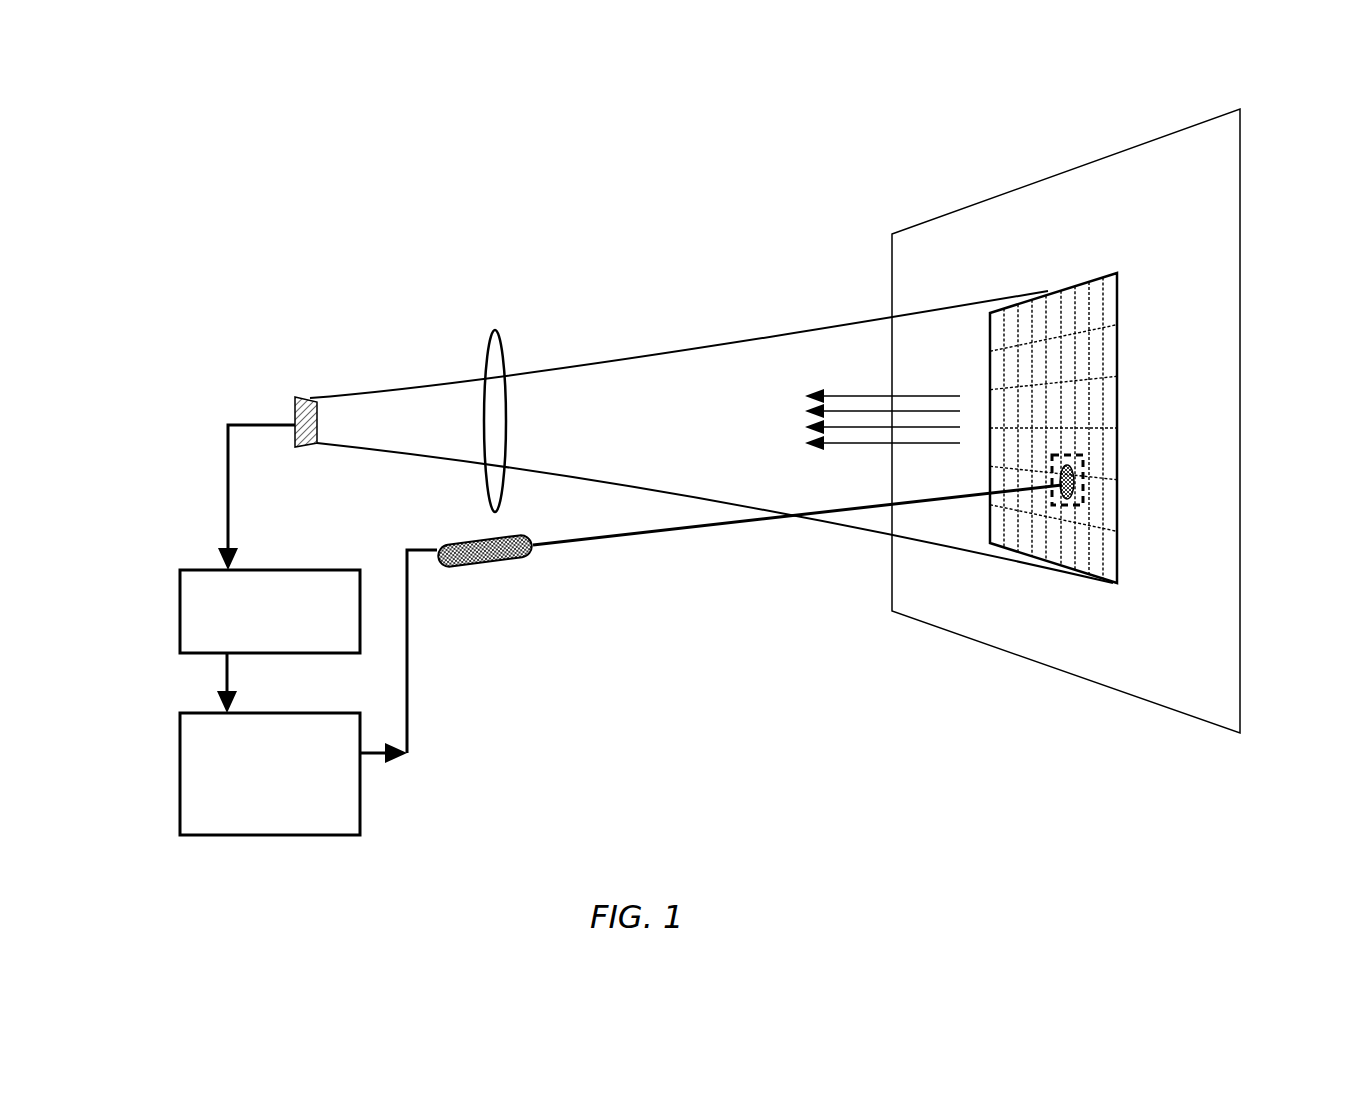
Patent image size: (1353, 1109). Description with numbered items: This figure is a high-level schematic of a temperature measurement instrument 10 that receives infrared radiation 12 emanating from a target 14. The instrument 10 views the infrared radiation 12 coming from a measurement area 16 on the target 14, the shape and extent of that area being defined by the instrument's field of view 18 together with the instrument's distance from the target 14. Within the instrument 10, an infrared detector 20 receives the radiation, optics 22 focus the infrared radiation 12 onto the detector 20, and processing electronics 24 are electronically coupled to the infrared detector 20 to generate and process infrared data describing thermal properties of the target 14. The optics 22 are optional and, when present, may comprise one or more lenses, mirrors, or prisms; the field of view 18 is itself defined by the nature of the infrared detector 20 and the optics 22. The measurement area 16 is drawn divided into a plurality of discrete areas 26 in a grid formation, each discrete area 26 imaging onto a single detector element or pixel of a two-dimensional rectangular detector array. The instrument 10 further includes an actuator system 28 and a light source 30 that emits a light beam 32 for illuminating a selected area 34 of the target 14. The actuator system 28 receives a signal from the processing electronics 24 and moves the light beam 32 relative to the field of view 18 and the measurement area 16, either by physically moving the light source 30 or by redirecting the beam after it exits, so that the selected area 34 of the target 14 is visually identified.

The temperature measurement instrument 10 is at (225, 358).
The infrared radiation 12 is at (858, 398).
The target 14 is at (1015, 195).
The measurement area 16 is at (1117, 328).
The field of view 18 is at (640, 363).
The infrared detector 20 is at (295, 397).
The optics 22 is at (495, 330).
The processing electronics 24 is at (178, 608).
The discrete areas 26 is at (1070, 307).
The actuator system 28 is at (332, 833).
The light source 30 is at (497, 567).
The light beam 32 is at (703, 527).
The selected area 34 is at (1085, 468).